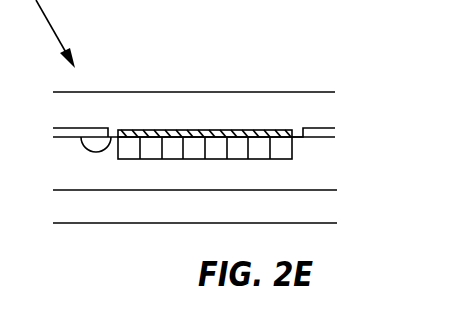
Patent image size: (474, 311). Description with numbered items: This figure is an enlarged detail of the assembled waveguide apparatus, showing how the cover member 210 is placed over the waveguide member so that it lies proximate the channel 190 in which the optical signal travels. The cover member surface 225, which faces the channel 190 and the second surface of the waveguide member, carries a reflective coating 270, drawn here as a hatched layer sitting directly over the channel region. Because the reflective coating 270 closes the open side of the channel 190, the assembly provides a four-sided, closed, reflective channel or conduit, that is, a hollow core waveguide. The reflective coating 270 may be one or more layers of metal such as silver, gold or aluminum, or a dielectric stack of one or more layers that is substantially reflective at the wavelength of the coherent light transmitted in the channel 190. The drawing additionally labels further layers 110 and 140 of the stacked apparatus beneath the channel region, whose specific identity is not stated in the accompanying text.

The substrate 110 is at (319, 212).
The intermediate layer 140 is at (319, 172).
The channel 190 is at (260, 147).
The cover member 210 is at (319, 115).
The cover member surface 225 is at (82, 136).
The reflective coating 270 is at (197, 130).